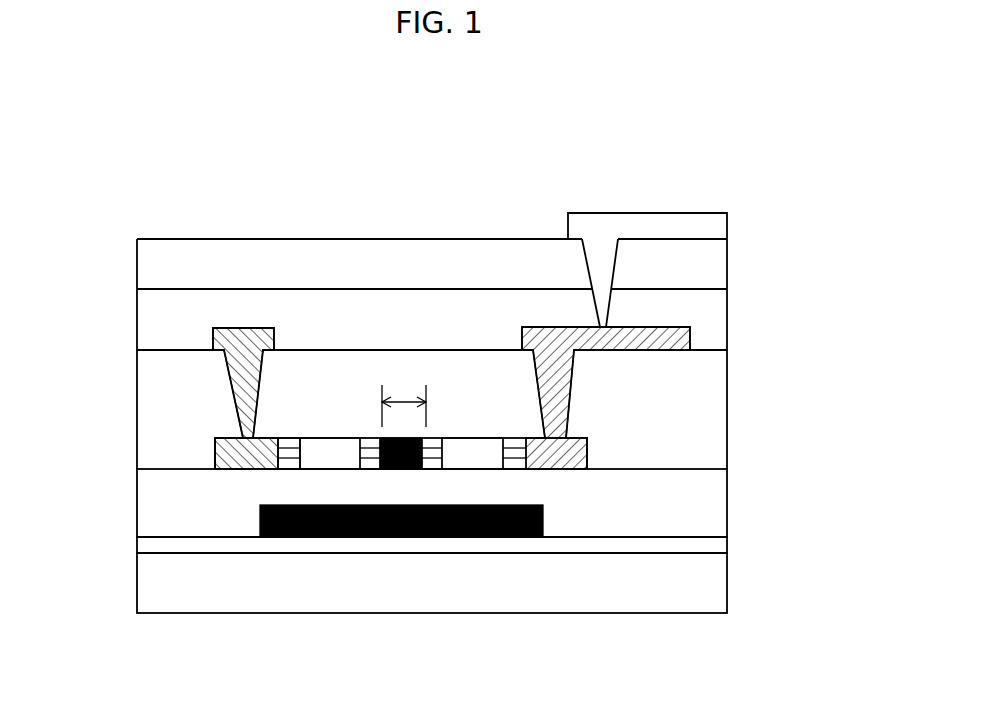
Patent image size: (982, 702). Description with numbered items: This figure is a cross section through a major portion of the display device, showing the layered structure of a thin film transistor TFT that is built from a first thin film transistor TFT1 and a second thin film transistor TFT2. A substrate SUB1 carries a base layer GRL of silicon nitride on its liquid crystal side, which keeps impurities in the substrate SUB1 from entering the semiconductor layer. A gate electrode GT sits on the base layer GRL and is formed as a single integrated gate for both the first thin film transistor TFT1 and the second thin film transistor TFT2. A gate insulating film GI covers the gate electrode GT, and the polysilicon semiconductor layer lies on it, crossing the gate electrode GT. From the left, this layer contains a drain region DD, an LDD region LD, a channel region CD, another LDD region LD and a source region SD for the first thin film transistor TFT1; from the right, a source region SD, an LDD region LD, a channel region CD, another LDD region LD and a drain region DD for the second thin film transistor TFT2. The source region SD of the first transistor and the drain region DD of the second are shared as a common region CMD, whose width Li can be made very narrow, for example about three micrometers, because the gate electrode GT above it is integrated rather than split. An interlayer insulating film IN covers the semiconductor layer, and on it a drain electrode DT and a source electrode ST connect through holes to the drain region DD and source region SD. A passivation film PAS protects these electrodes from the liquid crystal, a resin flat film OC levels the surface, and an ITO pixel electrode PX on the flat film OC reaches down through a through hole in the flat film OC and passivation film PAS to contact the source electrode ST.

The thin film transistor TFT is at (200, 145).
The first thin film transistor TFT1 is at (200, 208).
The second thin film transistor TFT2 is at (562, 214).
The pixel electrode PX is at (640, 230).
The flat film OC is at (185, 262).
The passivation film PAS is at (657, 305).
The drain electrode DT is at (225, 337).
The source electrode ST is at (667, 340).
The common region CMD is at (377, 355).
The width of the common region Li is at (404, 396).
The LDD region LD is at (288, 452).
The drain region DD is at (250, 452).
The source region SD is at (555, 455).
The channel region CD is at (333, 452).
The interlayer insulating film IN is at (697, 413).
The gate insulating film GI is at (697, 507).
The base layer GRL is at (167, 544).
The substrate SUB1 is at (690, 590).
The gate electrode GT is at (349, 537).